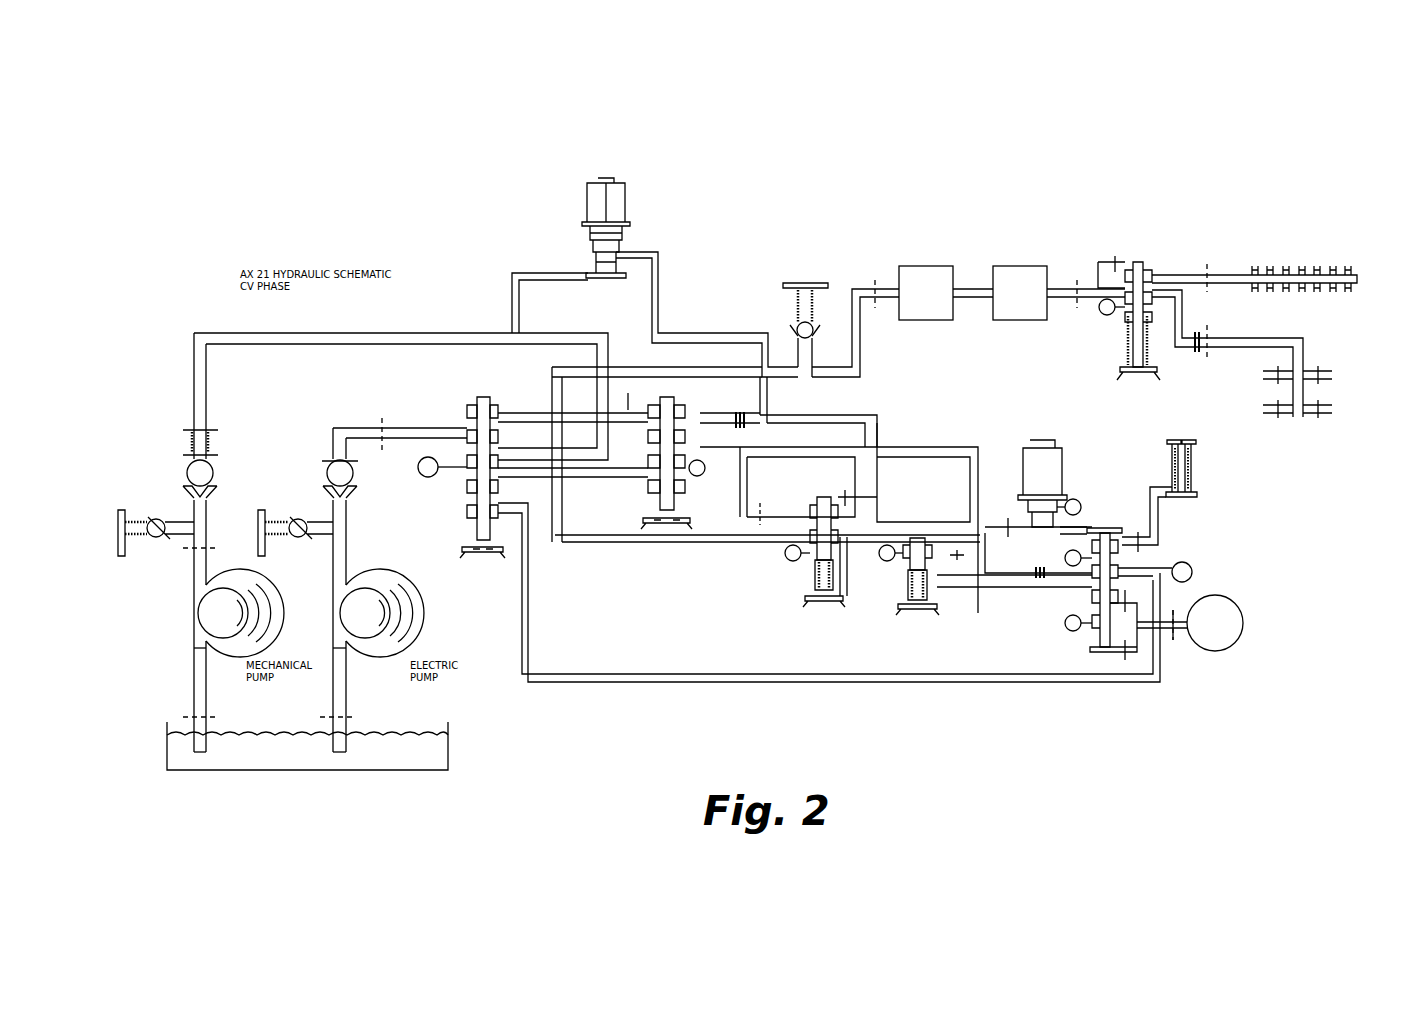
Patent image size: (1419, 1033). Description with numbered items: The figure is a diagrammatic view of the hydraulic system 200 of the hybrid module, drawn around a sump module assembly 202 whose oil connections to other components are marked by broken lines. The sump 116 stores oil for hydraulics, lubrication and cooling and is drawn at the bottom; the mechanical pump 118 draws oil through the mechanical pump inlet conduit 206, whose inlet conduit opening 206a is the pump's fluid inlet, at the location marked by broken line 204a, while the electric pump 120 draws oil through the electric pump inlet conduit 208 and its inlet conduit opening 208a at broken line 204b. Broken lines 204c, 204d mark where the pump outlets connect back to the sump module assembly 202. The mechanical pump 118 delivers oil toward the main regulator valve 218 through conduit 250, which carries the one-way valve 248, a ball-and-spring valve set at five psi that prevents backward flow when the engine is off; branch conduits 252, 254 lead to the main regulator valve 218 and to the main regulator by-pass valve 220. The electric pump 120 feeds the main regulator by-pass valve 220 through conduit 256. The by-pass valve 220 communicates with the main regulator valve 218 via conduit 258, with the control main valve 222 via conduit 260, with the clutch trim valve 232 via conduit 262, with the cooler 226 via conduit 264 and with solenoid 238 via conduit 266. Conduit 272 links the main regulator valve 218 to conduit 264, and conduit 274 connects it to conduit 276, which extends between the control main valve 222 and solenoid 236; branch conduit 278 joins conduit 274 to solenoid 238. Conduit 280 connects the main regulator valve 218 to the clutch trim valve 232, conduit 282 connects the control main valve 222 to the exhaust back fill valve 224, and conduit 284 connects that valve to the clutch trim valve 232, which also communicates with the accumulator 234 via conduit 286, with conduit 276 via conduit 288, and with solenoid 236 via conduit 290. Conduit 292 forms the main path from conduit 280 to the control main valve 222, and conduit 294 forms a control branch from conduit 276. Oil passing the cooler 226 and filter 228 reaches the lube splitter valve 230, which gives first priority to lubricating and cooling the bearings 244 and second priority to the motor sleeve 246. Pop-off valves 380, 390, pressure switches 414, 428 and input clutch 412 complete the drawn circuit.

The hydraulic system 200 is at (1260, 220).
The sump module assembly 202 is at (657, 706).
The sump 116 is at (386, 757).
The mechanical pump 118 is at (212, 612).
The electric pump 120 is at (392, 615).
The broken line 204a is at (181, 716).
The broken line 204b is at (350, 717).
The broken line 204c is at (183, 550).
The broken line 204d is at (330, 462).
The mechanical pump inlet conduit 206 is at (192, 683).
The inlet conduit opening 206a is at (198, 753).
The electric pump inlet conduit 208 is at (346, 692).
The inlet conduit opening 208a is at (338, 753).
The main regulator valve 218 is at (685, 522).
The main regulator by-pass valve 220 is at (466, 512).
The control main valve 222 is at (808, 572).
The exhaust back fill valve 224 is at (905, 562).
The cooler 226 is at (925, 266).
The filter 228 is at (1023, 266).
The lube splitter valve 230 is at (1125, 330).
The clutch trim valve 232 is at (1092, 652).
The accumulator 234 is at (1192, 483).
The solenoid 236 is at (1062, 475).
The solenoid 238 is at (625, 205).
The bearings 244 is at (1303, 427).
The motor sleeve 246 is at (1312, 272).
The one-way valve 248 is at (186, 465).
The conduit 250 is at (362, 333).
The branch conduit 252 is at (633, 395).
The branch conduit 254 is at (528, 410).
The conduit 256 is at (403, 428).
The conduit 258 is at (620, 510).
The conduit 260 is at (642, 542).
The conduit 262 is at (712, 683).
The conduit 264 is at (862, 348).
The conduit 266 is at (512, 290).
The conduit 272 is at (768, 400).
The conduit 274 is at (880, 420).
The conduit 276 is at (900, 520).
The branch conduit 278 is at (678, 333).
The conduit 280 is at (950, 447).
The conduit 282 is at (845, 598).
The conduit 284 is at (958, 590).
The conduit 286 is at (1160, 538).
The conduit 288 is at (1002, 532).
The conduit 290 is at (1078, 525).
The conduit 292 is at (748, 485).
The conduit 294 is at (850, 505).
The pressure relief valve 380 is at (152, 518).
The cooler popoff valve 390 is at (815, 305).
The input clutch 412 is at (1216, 652).
The pressure switch 414 is at (1192, 572).
The pressure switch 428 is at (418, 474).